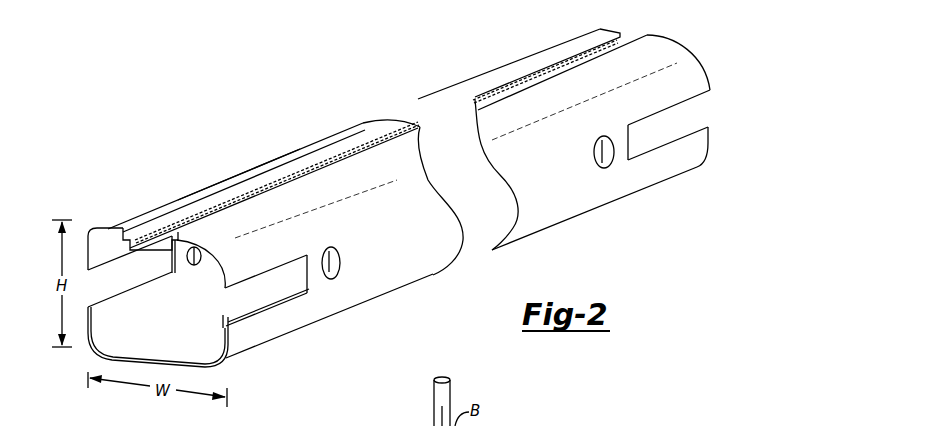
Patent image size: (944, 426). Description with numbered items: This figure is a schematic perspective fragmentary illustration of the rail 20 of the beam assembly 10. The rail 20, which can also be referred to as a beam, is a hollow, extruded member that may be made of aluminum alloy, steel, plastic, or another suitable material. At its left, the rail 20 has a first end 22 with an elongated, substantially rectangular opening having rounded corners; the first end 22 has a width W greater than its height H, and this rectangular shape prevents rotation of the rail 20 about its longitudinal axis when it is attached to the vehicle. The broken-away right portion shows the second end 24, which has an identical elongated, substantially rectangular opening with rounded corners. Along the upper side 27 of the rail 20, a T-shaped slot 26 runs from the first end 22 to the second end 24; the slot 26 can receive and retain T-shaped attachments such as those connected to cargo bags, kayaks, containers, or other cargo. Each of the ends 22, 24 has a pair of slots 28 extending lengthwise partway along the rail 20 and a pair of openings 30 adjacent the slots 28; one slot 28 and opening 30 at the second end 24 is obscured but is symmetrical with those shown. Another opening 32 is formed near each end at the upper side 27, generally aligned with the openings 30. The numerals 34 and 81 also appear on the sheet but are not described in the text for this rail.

The beam assembly 10 is at (270, 93).
The rail 20 is at (320, 327).
The first end 22 is at (97, 227).
The second end 24 is at (610, 32).
The T-shaped slot 26 is at (150, 235).
The upper side 27 is at (205, 188).
The slots 28 is at (127, 285).
The openings 30 is at (197, 250).
The opening 32 is at (273, 183).
The element 34 (adjacent figure) 34 is at (164, 0).
The pin (adjacent figure) 81 is at (406, 425).